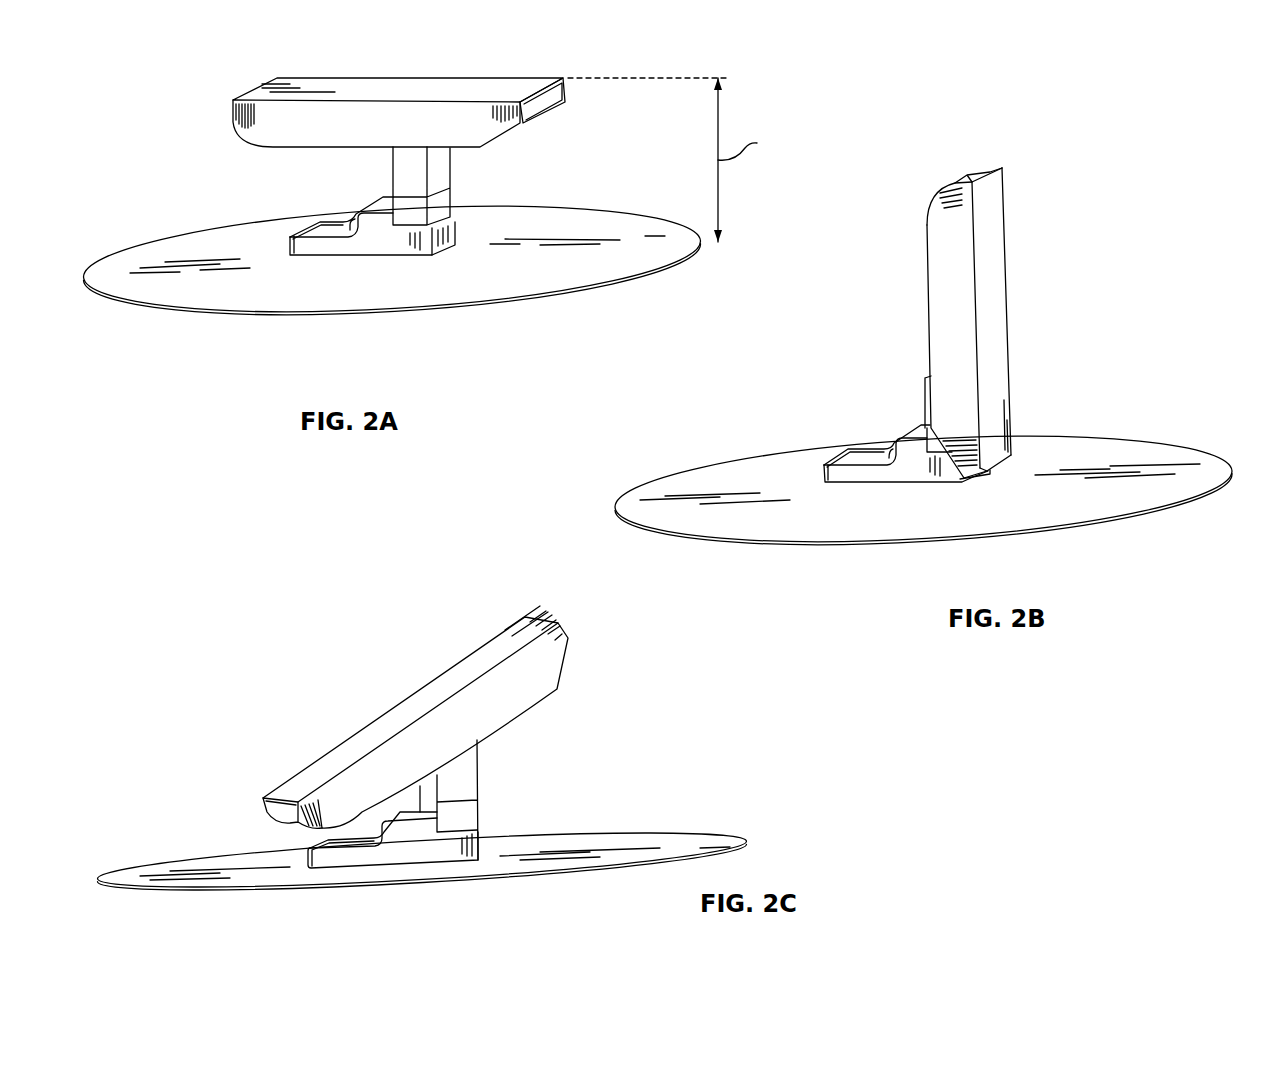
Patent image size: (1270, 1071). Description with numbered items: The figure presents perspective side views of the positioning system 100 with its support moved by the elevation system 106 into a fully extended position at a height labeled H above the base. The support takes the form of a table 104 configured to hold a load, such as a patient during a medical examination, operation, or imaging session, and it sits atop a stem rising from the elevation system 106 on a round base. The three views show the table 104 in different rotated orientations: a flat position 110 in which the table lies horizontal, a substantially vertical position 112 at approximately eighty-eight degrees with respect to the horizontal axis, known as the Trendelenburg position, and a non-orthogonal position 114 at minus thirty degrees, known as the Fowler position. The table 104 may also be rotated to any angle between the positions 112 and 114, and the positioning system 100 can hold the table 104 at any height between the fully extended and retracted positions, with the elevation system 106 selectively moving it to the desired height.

In FIG. 2A, the positioning system 100 is at (152, 60).
In FIG. 2B, the positioning system 100 is at (1097, 142).
In FIG. 2C, the positioning system 100 is at (227, 660).
In FIG. 2A, the table 104 is at (508, 83).
In FIG. 2B, the table 104 is at (940, 258).
In FIG. 2C, the table 104 is at (533, 684).
In FIG. 2A, the elevation system 106 is at (381, 243).
In FIG. 2B, the elevation system 106 is at (905, 470).
In FIG. 2C, the elevation system 106 is at (422, 845).
In FIG. 2A, the flat position 110 is at (364, 59).
In FIG. 2B, the substantially vertical position 112 is at (1027, 212).
In FIG. 2C, the non-orthogonal position 114 is at (358, 684).